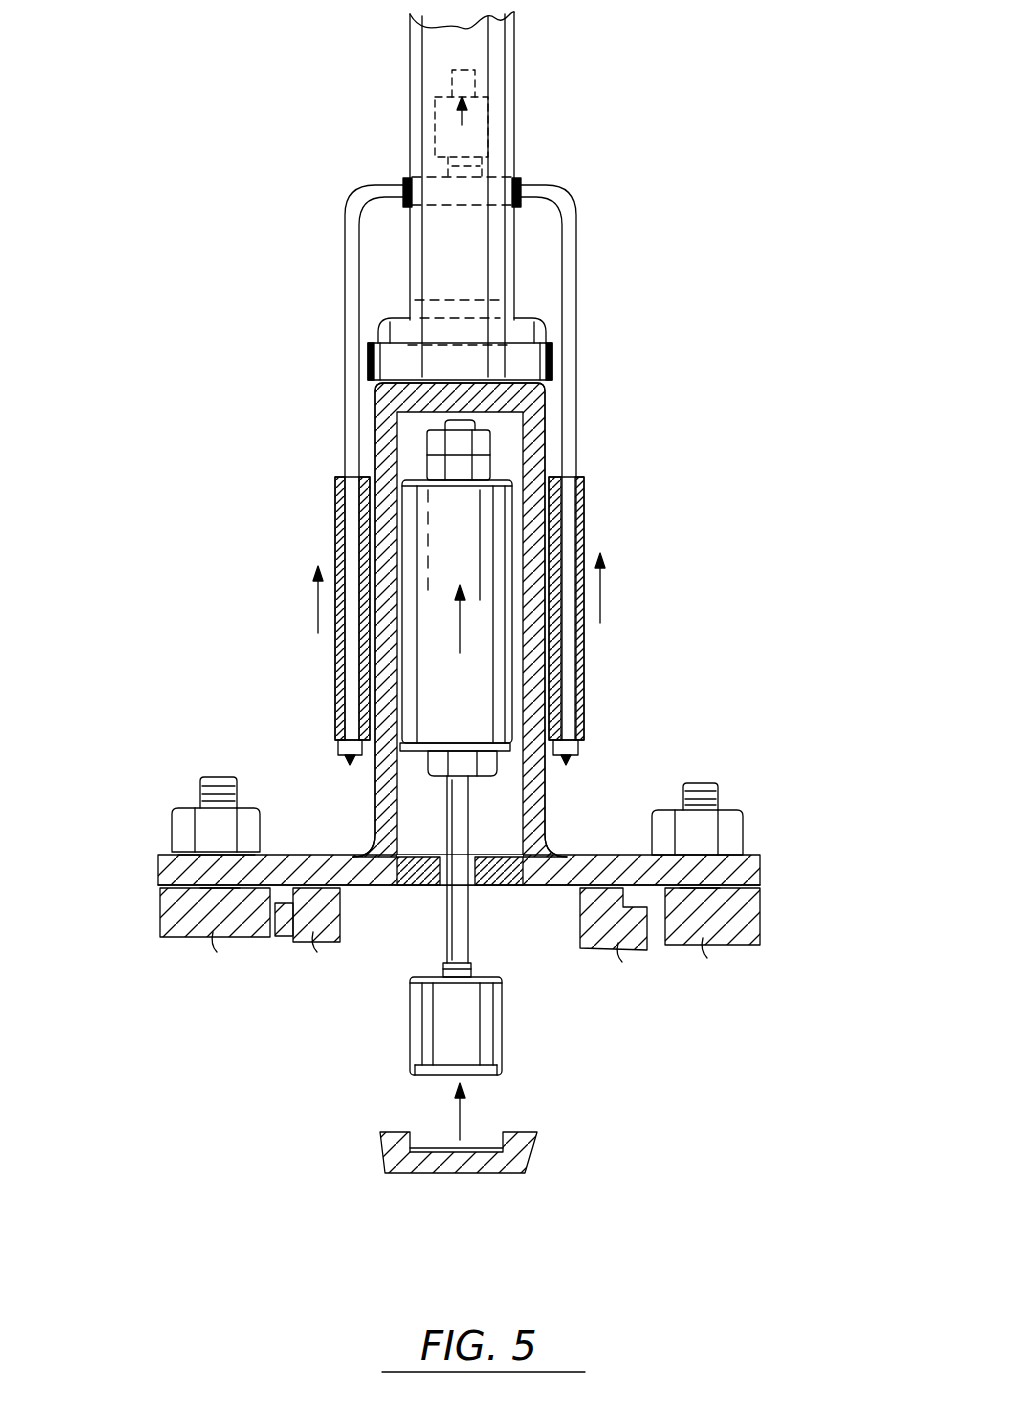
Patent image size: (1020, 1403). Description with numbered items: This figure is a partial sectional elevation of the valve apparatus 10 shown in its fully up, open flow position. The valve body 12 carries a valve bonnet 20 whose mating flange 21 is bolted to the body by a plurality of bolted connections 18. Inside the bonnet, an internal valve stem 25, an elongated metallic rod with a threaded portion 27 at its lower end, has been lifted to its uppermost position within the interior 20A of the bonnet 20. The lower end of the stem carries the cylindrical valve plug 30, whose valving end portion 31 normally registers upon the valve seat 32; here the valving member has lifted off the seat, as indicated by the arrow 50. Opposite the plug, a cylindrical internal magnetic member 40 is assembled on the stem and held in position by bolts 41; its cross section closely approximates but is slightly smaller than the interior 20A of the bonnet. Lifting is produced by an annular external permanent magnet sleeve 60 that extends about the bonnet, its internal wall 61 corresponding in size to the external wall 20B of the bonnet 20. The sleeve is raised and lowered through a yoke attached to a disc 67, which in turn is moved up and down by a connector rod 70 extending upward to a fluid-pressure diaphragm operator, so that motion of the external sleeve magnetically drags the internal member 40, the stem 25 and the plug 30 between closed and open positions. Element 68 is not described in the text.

The valve apparatus 10 is at (686, 260).
The valve body 12 is at (158, 938).
The bolted connections 18 is at (170, 818).
The valve bonnet 20 is at (372, 795).
The interior of bonnet 20A is at (496, 448).
The external wall of bonnet 20B is at (373, 432).
The mating flange 21 is at (158, 858).
The valve stem 25 is at (528, 840).
The threaded portion 27 is at (480, 965).
The valve plug 30 is at (503, 1030).
The valving end portion 31 is at (412, 1068).
The valve seat 32 is at (492, 1138).
The internal magnetic member 40 is at (470, 700).
The bolts 41 is at (492, 766).
The arrow 50 is at (437, 1108).
The external permanent magnet sleeve 60 is at (588, 623).
The internal wall of sleeve 61 is at (546, 465).
The disc 67 is at (500, 188).
The sensor unit 68 is at (490, 125).
The connector rod 70 is at (493, 72).